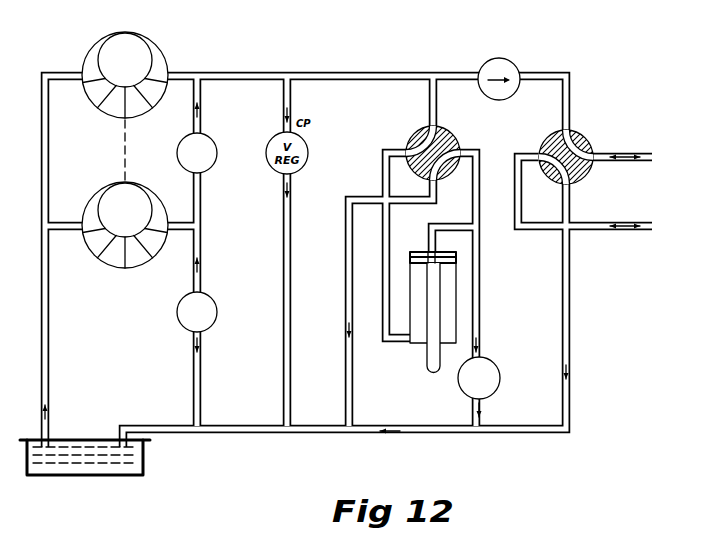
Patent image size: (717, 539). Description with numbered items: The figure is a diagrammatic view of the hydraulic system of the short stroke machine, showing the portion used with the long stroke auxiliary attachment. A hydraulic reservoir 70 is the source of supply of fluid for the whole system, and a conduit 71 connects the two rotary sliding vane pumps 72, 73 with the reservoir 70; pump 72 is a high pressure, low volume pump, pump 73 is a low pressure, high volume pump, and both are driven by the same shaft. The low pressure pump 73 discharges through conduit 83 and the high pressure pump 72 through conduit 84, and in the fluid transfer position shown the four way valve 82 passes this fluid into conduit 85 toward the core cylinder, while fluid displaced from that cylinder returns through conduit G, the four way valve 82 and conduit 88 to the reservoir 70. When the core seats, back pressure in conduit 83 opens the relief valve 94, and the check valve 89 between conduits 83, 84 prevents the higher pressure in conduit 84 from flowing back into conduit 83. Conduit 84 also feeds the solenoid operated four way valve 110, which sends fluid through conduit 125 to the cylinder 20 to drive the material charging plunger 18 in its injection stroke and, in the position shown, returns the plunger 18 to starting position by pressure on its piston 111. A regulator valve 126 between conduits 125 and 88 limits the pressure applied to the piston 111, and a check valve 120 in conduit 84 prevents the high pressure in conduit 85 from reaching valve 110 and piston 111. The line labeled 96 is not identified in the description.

The material charging plunger 18 is at (424, 362).
The cylinder 20 is at (458, 288).
The hydraulic reservoir 70 is at (101, 473).
The conduit 71 is at (48, 341).
The pump 72 is at (100, 48).
The pump 73 is at (100, 198).
The four way valve 82 is at (584, 140).
The conduit 83 is at (203, 215).
The conduit 84 is at (243, 72).
The conduit 85 is at (648, 156).
The conduit 88 is at (245, 433).
The check valve 89 is at (178, 152).
The relief valve 94 is at (178, 313).
The regulated pressure line 96 is at (284, 243).
The four way valve 110 is at (452, 137).
The piston 111 is at (418, 256).
The check valve 120 is at (511, 63).
The conduit 125 is at (482, 252).
The regulator valve 126 is at (500, 377).
The conduit G is at (646, 222).